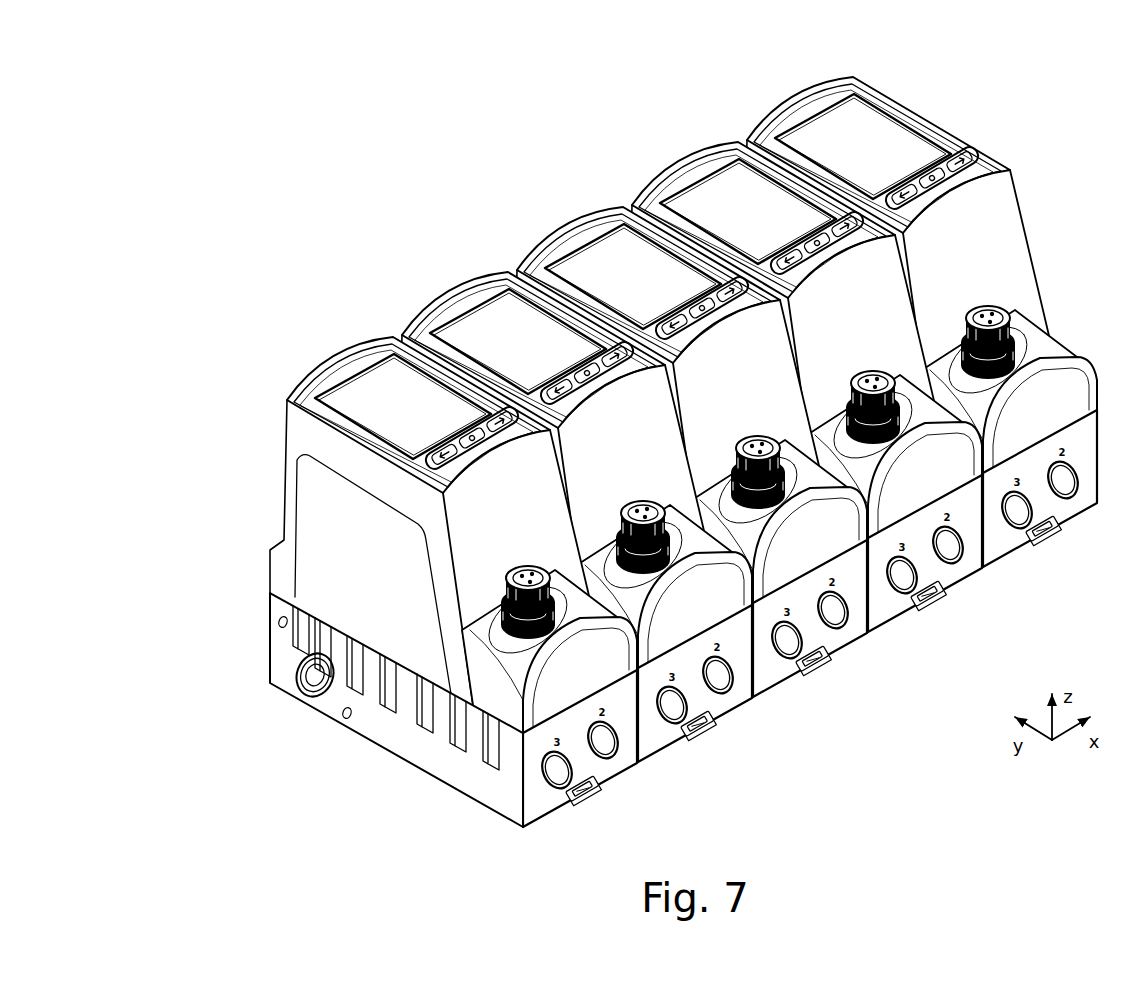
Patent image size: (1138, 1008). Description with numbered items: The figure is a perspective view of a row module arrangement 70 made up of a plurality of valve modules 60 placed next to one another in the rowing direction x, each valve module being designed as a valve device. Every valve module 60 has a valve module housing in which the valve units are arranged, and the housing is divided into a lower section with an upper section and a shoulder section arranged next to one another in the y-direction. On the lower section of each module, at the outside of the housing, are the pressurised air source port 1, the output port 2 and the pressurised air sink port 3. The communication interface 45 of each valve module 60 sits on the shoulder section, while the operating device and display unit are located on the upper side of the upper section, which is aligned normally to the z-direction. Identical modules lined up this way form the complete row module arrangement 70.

The row module arrangement 70 is at (667, 434).
The valve module 60 is at (306, 369).
The communication interface 45 is at (525, 573).
The pressurised air source port 1 is at (316, 682).
The output port 2 is at (606, 752).
The pressurised air sink port 3 is at (552, 775).